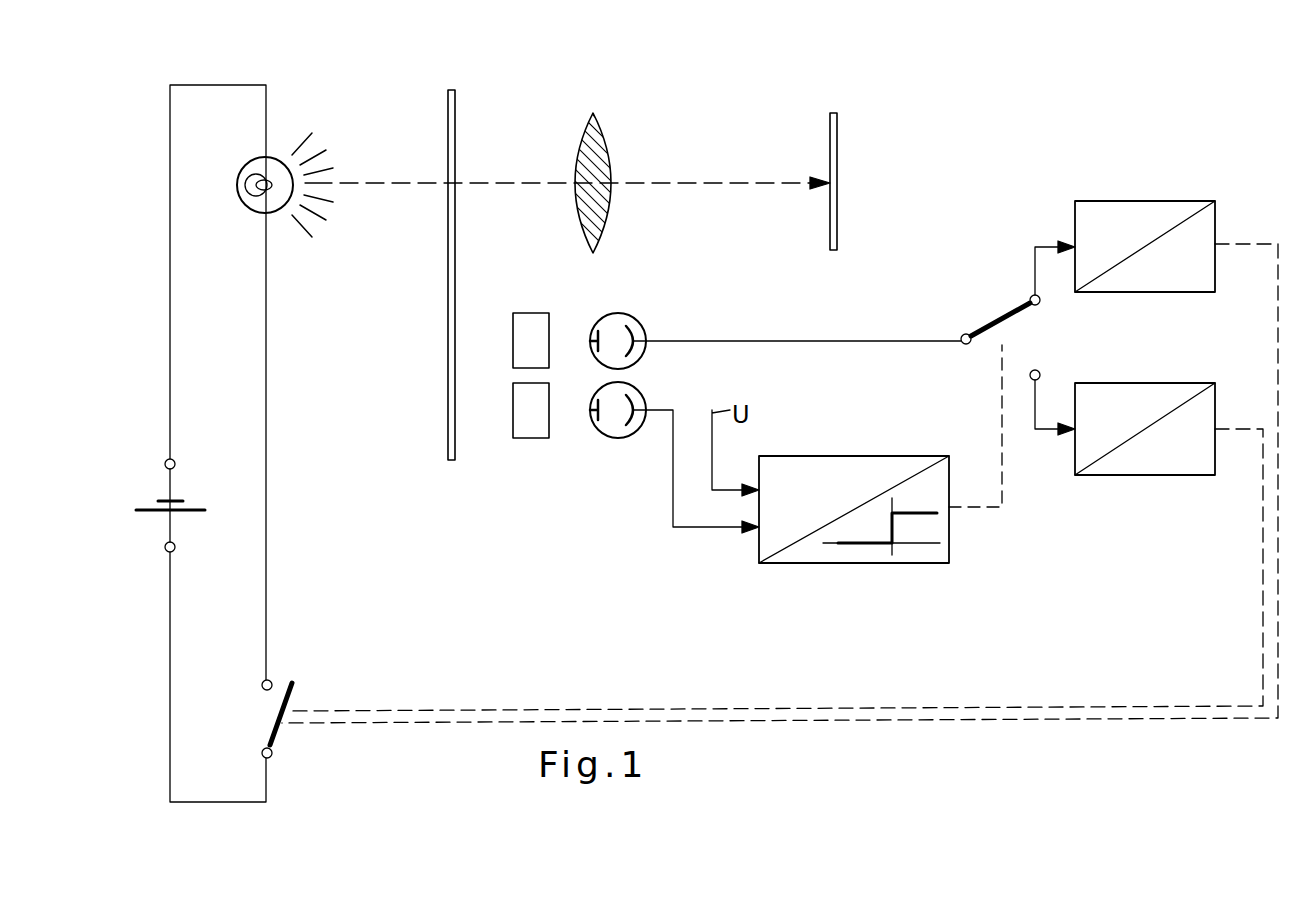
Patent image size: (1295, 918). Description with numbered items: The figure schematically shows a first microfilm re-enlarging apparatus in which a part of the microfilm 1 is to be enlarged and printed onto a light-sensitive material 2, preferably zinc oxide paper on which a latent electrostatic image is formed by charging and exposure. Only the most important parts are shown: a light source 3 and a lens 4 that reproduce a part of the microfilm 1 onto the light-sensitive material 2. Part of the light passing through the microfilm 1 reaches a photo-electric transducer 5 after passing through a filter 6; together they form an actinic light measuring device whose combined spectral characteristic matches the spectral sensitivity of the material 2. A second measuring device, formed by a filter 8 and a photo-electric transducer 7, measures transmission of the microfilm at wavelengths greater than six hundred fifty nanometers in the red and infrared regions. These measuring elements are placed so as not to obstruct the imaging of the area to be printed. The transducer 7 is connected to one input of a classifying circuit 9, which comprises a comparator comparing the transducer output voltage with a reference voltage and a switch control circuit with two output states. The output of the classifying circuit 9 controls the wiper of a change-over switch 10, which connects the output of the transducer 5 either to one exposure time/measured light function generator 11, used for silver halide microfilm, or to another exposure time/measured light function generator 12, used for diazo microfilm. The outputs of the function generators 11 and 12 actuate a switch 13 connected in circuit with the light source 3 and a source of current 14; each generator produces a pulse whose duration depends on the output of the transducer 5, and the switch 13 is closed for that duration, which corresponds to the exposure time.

The microfilm 1 is at (452, 110).
The light-sensitive material 2 is at (832, 120).
The light source 3 is at (245, 200).
The lens 4 is at (583, 140).
The photo-electric transducer 5 is at (622, 325).
The filter 6 is at (530, 325).
The photo-electric transducer 7 is at (620, 430).
The filter 8 is at (527, 430).
The classifying circuit 9 is at (891, 462).
The change-over switch 10 is at (1004, 315).
The exposure time/measured light function generator 11 is at (1160, 205).
The exposure time/measured light function generator 12 is at (1165, 390).
The switch 13 is at (275, 716).
The source of current 14 is at (187, 505).